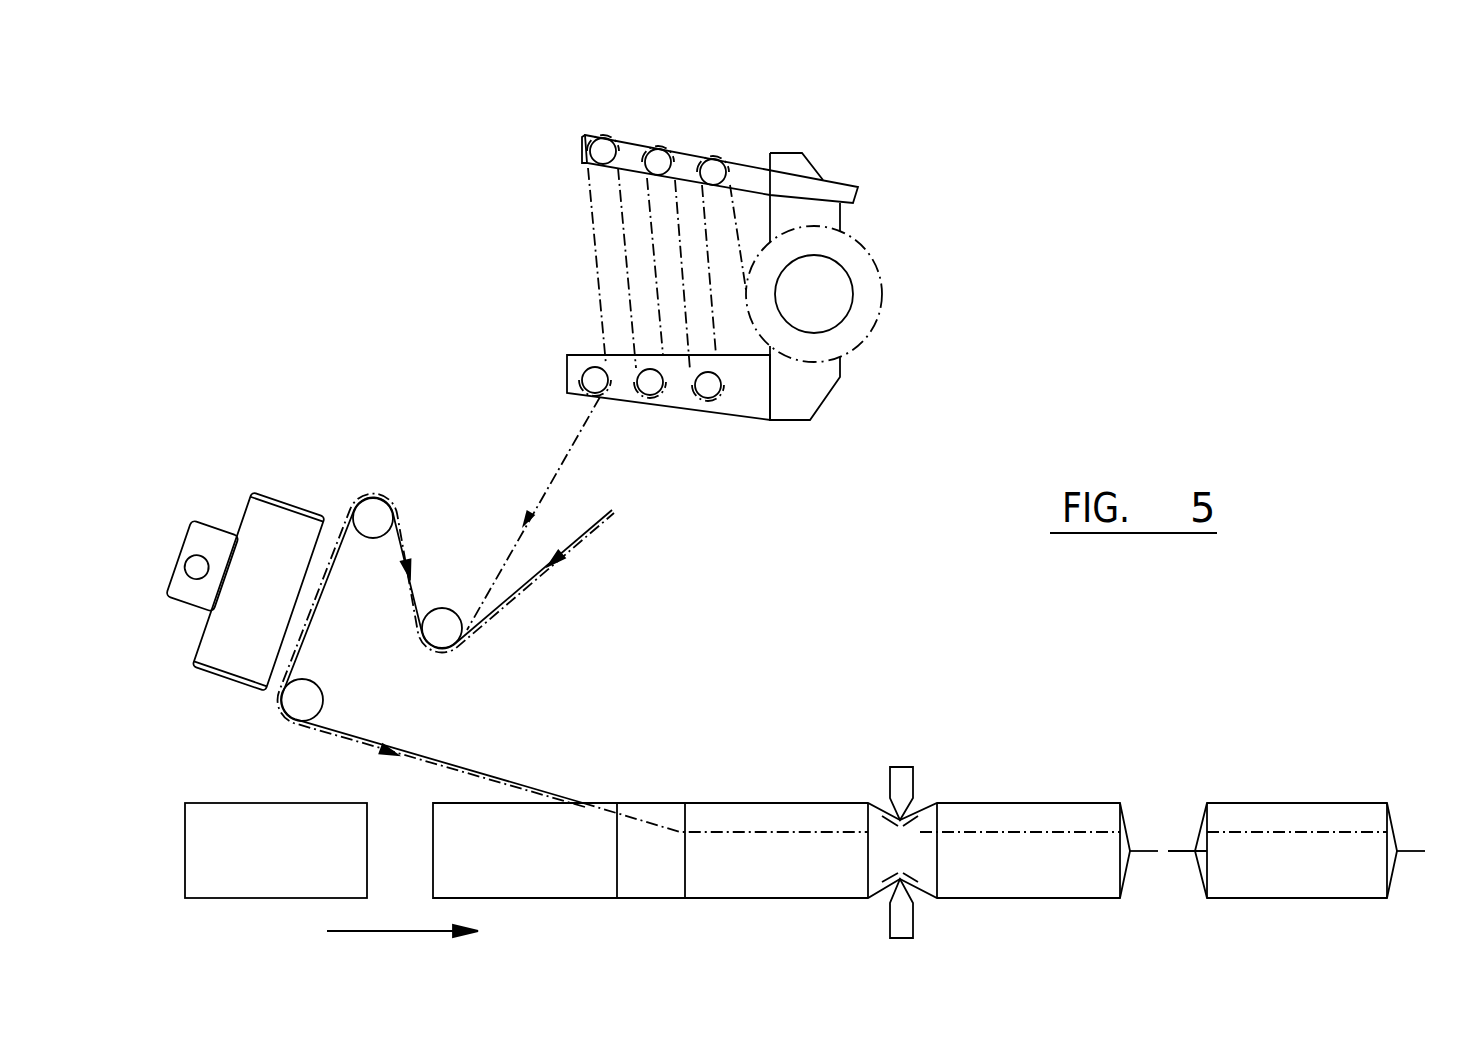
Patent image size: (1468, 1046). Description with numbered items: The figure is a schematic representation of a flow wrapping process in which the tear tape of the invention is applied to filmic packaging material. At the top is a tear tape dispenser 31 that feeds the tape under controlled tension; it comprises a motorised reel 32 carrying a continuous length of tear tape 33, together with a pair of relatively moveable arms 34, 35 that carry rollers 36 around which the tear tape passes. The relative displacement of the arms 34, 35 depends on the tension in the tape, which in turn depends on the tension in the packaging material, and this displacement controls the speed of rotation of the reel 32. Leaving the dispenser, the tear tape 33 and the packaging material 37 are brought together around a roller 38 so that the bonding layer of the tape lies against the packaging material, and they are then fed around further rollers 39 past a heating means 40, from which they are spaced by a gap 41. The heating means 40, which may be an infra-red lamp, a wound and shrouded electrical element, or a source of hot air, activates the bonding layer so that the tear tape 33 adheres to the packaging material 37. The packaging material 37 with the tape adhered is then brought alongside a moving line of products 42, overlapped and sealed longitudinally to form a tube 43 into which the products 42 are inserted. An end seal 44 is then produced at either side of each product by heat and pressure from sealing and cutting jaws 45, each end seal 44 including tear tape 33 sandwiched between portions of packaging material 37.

The tear tape dispenser 31 is at (880, 217).
The motorised reel 32 is at (827, 298).
The tear tape 33 is at (592, 218).
The arm 34 is at (747, 173).
The arm 35 is at (750, 398).
The rollers 36 is at (712, 167).
The packaging material 37 is at (593, 530).
The roller 38 is at (447, 630).
The further rollers 39 is at (373, 507).
The heating means 40 is at (260, 578).
The gap 41 is at (312, 573).
The products 42 is at (281, 869).
The tube 43 is at (653, 803).
The end seal 44 is at (1197, 852).
The sealing and cutting jaws 45 is at (907, 793).